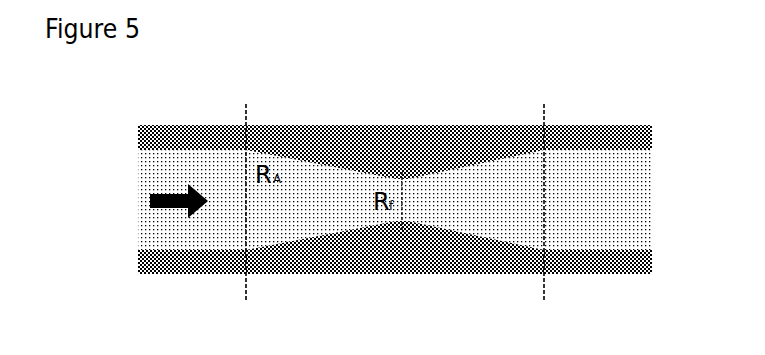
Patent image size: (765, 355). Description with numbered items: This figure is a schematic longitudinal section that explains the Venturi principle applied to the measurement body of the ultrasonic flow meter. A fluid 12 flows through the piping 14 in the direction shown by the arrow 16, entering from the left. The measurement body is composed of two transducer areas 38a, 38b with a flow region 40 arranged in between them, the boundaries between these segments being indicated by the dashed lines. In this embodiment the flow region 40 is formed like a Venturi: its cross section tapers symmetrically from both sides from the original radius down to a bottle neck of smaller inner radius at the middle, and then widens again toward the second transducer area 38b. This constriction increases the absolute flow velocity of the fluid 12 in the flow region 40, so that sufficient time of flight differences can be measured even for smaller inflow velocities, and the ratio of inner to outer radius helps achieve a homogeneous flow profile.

The fluid 12 is at (367, 200).
The piping 14 is at (393, 269).
The arrow 16 is at (142, 210).
The transducer area 38a is at (175, 192).
The transducer area 38b is at (614, 192).
The flow region 40 is at (395, 123).